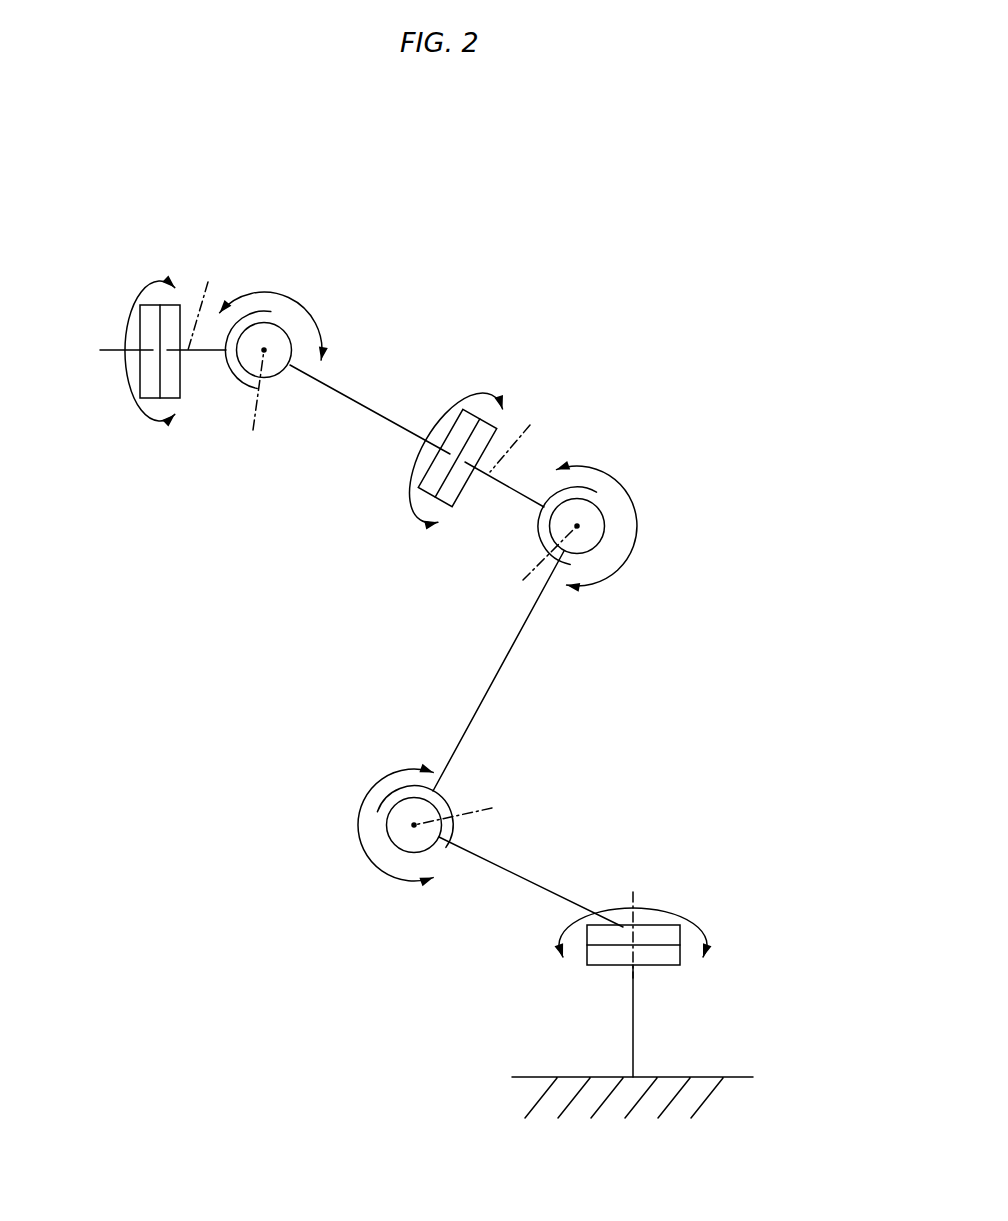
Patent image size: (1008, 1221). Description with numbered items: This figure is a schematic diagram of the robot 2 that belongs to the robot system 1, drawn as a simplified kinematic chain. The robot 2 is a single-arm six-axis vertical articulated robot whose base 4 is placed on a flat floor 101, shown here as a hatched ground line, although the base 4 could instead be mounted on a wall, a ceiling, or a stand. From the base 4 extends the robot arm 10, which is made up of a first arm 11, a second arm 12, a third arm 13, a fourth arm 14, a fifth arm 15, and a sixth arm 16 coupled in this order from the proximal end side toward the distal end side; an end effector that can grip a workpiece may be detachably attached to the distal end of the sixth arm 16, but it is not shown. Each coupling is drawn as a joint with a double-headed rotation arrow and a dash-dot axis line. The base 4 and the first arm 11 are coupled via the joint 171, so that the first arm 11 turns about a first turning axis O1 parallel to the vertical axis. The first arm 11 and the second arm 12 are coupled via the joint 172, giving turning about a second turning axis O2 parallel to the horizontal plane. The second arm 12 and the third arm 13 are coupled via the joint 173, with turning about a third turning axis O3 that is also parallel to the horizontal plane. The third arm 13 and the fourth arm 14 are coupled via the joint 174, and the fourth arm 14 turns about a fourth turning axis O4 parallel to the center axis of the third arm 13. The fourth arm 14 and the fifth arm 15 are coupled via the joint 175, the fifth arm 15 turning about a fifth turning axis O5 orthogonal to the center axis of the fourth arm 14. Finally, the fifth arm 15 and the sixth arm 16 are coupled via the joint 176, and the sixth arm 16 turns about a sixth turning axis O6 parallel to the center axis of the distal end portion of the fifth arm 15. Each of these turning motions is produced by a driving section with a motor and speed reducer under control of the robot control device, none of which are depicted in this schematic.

The robot system 1 is at (598, 163).
The robot 2 is at (628, 200).
The base 4 is at (737, 982).
The robot arm 10 is at (647, 267).
The first arm 11 is at (582, 852).
The second arm 12 is at (453, 670).
The third arm 13 is at (545, 462).
The fourth arm 14 is at (363, 377).
The fifth arm 15 is at (205, 363).
The sixth arm 16 is at (113, 363).
The floor 101 is at (737, 1073).
The joint 171 is at (722, 925).
The joint 172 is at (470, 783).
The joint 173 is at (527, 537).
The joint 174 is at (507, 377).
The joint 175 is at (283, 390).
The joint 176 is at (163, 263).
The first turning axis O1 is at (637, 907).
The second turning axis O2 is at (472, 809).
The third turning axis O3 is at (529, 567).
The fourth turning axis O4 is at (520, 432).
The fifth turning axis O5 is at (249, 405).
The sixth turning axis O6 is at (205, 302).